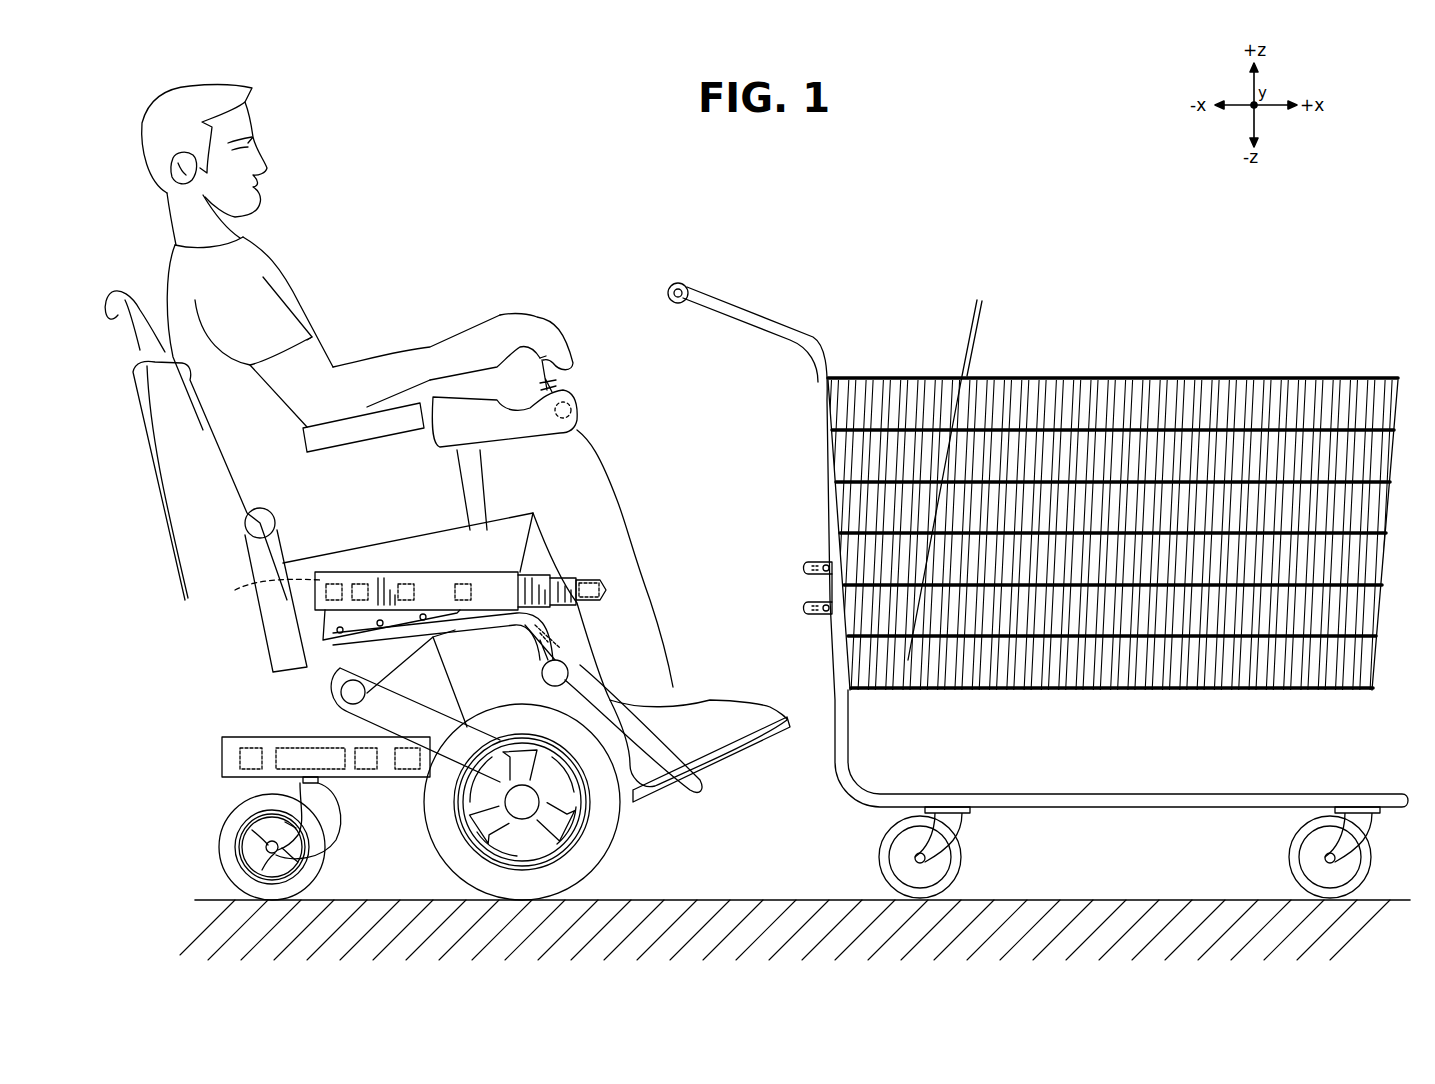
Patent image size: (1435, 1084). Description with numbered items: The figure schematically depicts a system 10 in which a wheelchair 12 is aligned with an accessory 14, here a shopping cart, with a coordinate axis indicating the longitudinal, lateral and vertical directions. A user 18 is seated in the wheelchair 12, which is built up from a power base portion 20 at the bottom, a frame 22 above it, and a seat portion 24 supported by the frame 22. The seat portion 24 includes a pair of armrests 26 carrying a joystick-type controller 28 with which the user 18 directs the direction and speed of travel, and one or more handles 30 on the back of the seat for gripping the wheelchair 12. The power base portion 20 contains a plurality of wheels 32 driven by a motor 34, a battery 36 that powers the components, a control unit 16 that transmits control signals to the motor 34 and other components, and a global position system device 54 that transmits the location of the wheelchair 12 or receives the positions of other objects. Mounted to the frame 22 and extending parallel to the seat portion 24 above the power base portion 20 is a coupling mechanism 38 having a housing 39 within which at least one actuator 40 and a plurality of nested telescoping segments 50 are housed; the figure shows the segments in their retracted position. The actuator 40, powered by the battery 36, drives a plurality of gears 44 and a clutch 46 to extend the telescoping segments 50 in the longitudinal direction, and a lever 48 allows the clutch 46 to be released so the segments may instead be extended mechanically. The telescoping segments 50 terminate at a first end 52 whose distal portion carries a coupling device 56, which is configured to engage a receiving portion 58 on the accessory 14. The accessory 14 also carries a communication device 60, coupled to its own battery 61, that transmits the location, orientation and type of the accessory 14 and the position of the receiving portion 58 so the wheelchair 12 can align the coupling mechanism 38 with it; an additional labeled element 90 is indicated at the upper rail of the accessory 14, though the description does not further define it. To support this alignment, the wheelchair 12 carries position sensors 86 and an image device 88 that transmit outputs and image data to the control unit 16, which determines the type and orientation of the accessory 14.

The system 10 is at (820, 207).
The wheelchair 12 is at (192, 402).
The accessory 14 is at (1051, 536).
The control unit 16 is at (245, 776).
The user 18 is at (270, 272).
The power base portion 20 is at (281, 792).
The frame 22 is at (330, 650).
The seat portion 24 is at (520, 515).
The armrests 26 is at (545, 420).
The controller 28 is at (565, 392).
The handles 30 is at (126, 310).
The wheels 32 is at (303, 882).
The motor 34 is at (405, 772).
The battery 36 is at (330, 772).
The coupling mechanism 38 is at (470, 620).
The housing 39 is at (565, 555).
The actuator 40 is at (330, 592).
The gears 44 is at (360, 585).
The clutch 46 is at (406, 583).
The lever 48 is at (462, 585).
The telescoping segments 50 is at (620, 615).
The first end 52 is at (592, 588).
The global position system device 54 is at (365, 772).
The coupling device 56 is at (607, 590).
The receiving portion 58 is at (810, 595).
The communication device 60 is at (815, 562).
The battery 61 is at (818, 614).
The position sensors 86 is at (545, 640).
The image device 88 is at (582, 400).
The cart basket rail 90 is at (1398, 378).